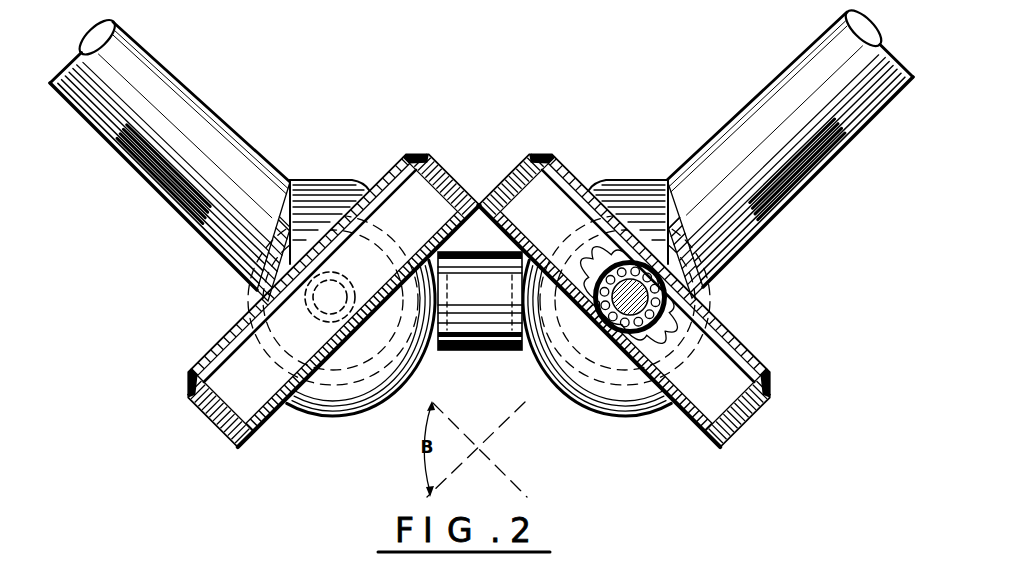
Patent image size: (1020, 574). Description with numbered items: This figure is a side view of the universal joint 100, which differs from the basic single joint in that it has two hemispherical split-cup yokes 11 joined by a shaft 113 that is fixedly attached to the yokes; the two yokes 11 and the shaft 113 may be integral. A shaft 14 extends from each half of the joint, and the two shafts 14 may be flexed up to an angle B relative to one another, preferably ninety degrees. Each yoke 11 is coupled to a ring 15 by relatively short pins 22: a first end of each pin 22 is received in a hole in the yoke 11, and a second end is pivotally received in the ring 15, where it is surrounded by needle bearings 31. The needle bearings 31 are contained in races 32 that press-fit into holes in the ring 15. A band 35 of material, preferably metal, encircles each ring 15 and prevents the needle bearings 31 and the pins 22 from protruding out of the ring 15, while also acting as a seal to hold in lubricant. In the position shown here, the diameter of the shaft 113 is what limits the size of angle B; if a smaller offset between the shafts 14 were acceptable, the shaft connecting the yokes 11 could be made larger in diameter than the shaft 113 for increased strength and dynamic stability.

The universal joint 100 is at (481, 232).
The hemispherical split-cup yoke 11 is at (341, 180).
The shaft 14 is at (181, 88).
The ring 15 is at (186, 378).
The band 35 is at (456, 160).
The shaft 113 is at (460, 352).
The pin 22 is at (707, 287).
The needle bearings 31 is at (683, 312).
The races 32 is at (690, 250).